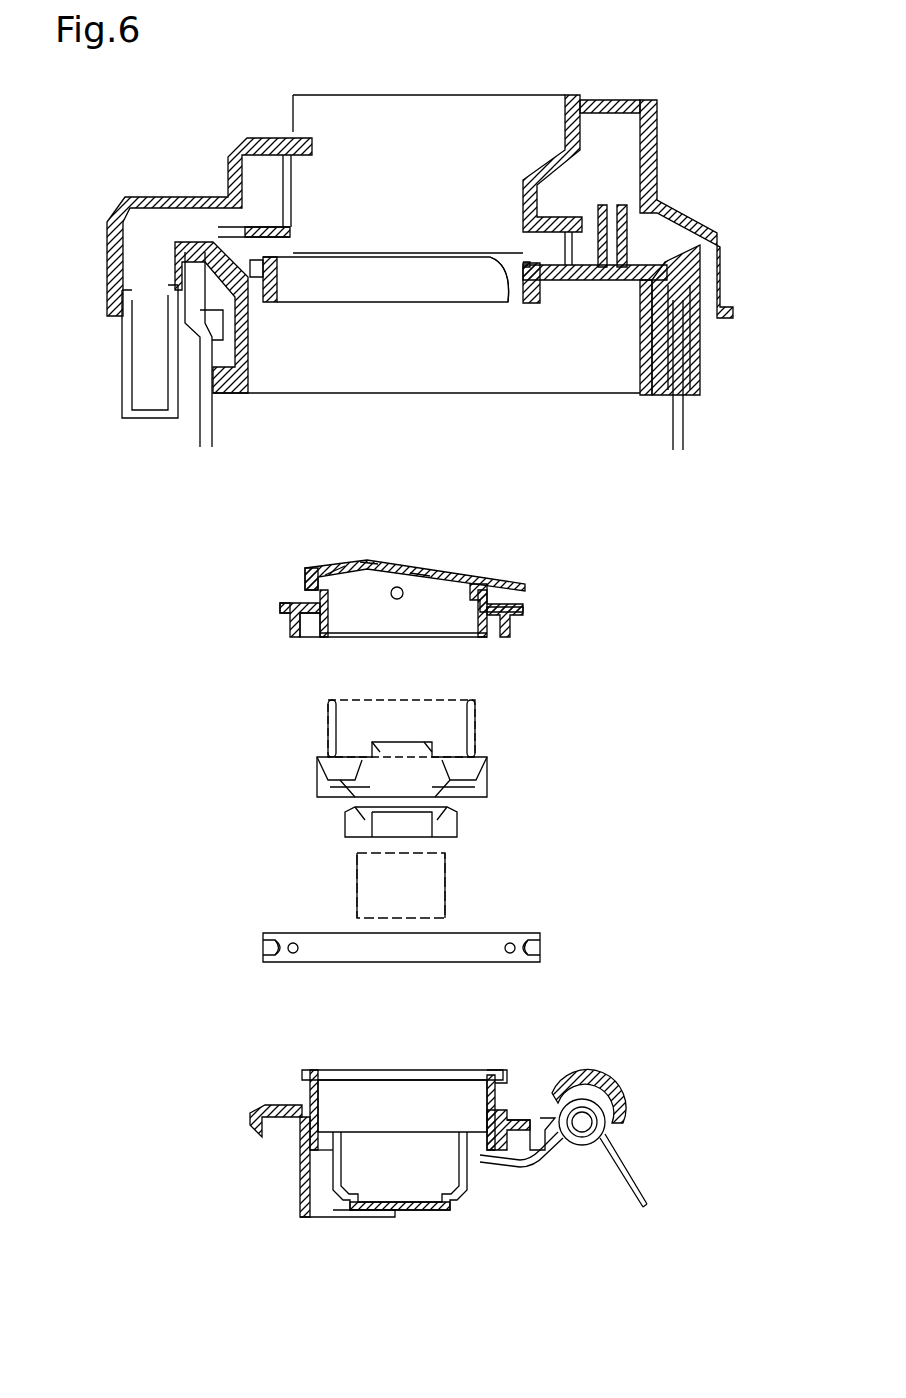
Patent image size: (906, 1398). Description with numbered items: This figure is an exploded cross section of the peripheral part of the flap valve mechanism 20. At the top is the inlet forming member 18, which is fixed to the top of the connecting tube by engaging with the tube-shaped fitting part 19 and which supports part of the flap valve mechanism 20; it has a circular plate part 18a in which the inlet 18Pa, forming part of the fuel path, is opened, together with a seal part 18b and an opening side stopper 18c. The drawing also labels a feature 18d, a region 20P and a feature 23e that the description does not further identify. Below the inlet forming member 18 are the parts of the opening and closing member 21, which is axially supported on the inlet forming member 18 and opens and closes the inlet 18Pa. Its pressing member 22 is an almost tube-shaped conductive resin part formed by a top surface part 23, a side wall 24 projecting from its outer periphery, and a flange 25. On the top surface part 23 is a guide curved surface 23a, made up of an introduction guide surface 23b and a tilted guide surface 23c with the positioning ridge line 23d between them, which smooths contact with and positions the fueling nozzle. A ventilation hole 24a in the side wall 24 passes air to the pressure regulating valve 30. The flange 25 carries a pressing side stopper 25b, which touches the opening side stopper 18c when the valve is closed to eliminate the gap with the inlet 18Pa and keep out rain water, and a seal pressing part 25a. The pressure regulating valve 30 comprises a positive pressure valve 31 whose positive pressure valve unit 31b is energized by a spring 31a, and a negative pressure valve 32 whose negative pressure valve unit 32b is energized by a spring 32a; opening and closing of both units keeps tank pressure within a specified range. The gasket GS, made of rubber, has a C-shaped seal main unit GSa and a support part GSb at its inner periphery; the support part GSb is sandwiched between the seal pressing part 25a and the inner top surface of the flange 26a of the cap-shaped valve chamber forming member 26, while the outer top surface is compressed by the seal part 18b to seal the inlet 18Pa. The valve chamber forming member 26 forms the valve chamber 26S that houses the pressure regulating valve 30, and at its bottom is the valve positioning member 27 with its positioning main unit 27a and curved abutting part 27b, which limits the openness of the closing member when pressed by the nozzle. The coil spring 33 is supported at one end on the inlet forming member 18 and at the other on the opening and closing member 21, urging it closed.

The inlet forming member 18 is at (690, 290).
The circular plate part 18a is at (607, 280).
The seal part 18b is at (537, 303).
The opening side stopper 18c is at (497, 265).
The housing pipe portion 18d is at (107, 272).
The inlet 18Pa is at (400, 270).
The fitting part 19 is at (648, 365).
The flap valve mechanism 20 is at (245, 528).
The pump section 20P is at (449, 451).
The opening and closing member 21 is at (523, 585).
The pressing member 22 is at (175, 545).
The top surface part 23 is at (305, 578).
The guide curved surface 23a is at (444, 515).
The introduction guide surface 23b is at (420, 580).
The tilted guide surface 23c is at (335, 572).
The positioning ridge line 23d is at (365, 565).
The cover end wall 23e is at (305, 582).
The side wall 24 is at (322, 600).
The ventilation hole 24a is at (397, 600).
The flange 25 is at (290, 612).
The seal pressing part 25a is at (290, 620).
The pressing side stopper 25b is at (325, 615).
The valve chamber forming member 26 is at (300, 1072).
The flange 26a is at (265, 1108).
The valve chamber 26S is at (437, 1119).
The valve positioning member 27 is at (222, 1157).
The positioning main unit 27a is at (300, 1170).
The abutting part 27b is at (300, 1217).
The pressure regulating valve 30 is at (245, 748).
The positive pressure valve 31 is at (565, 728).
The spring 31a is at (475, 728).
The positive pressure valve unit 31b is at (487, 770).
The negative pressure valve 32 is at (565, 815).
The spring 32a is at (445, 870).
The negative pressure valve unit 32b is at (455, 820).
The spring 33 is at (582, 1145).
The gasket GS is at (268, 962).
The seal main unit GSa is at (278, 962).
The support part GSb is at (298, 952).